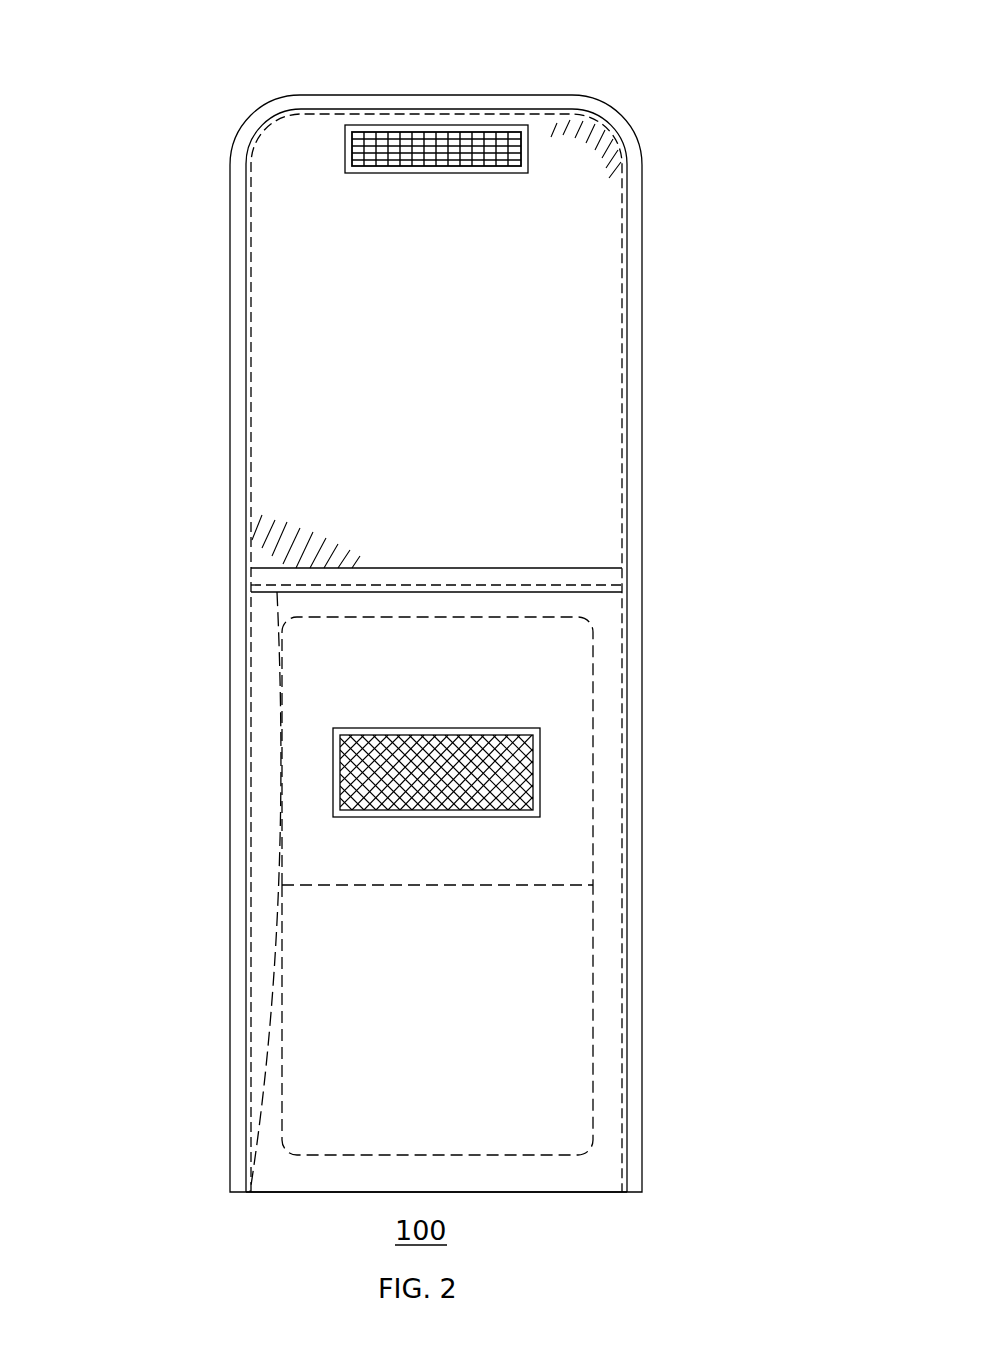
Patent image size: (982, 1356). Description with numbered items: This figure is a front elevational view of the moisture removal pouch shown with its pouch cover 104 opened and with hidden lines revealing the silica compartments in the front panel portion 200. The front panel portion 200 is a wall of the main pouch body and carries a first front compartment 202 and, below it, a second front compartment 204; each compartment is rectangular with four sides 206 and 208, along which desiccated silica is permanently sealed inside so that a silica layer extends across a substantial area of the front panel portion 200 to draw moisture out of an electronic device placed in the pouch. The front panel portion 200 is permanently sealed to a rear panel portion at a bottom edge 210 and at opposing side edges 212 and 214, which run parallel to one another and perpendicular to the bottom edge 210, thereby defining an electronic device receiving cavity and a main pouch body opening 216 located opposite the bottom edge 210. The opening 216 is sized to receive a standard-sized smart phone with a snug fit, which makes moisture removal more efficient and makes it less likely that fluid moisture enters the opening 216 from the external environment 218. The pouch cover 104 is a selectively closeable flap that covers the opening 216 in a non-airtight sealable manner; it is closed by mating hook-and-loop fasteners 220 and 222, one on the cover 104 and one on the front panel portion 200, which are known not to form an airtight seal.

The pouch cover 104 is at (217, 369).
The front panel portion 200 is at (276, 799).
The first front compartment 202 is at (295, 710).
The second front compartment 204 is at (293, 1046).
The sides of the first front compartment 206 is at (594, 665).
The sides of the second front compartment 208 is at (594, 955).
The bottom edge 210 is at (322, 1192).
The side edge 212 is at (243, 889).
The side edge 214 is at (640, 842).
The main pouch body opening 216 is at (494, 550).
The external environment 218 is at (801, 586).
The hook-and-loop fastener 220 is at (492, 152).
The hook-and-loop fastener 222 is at (383, 745).